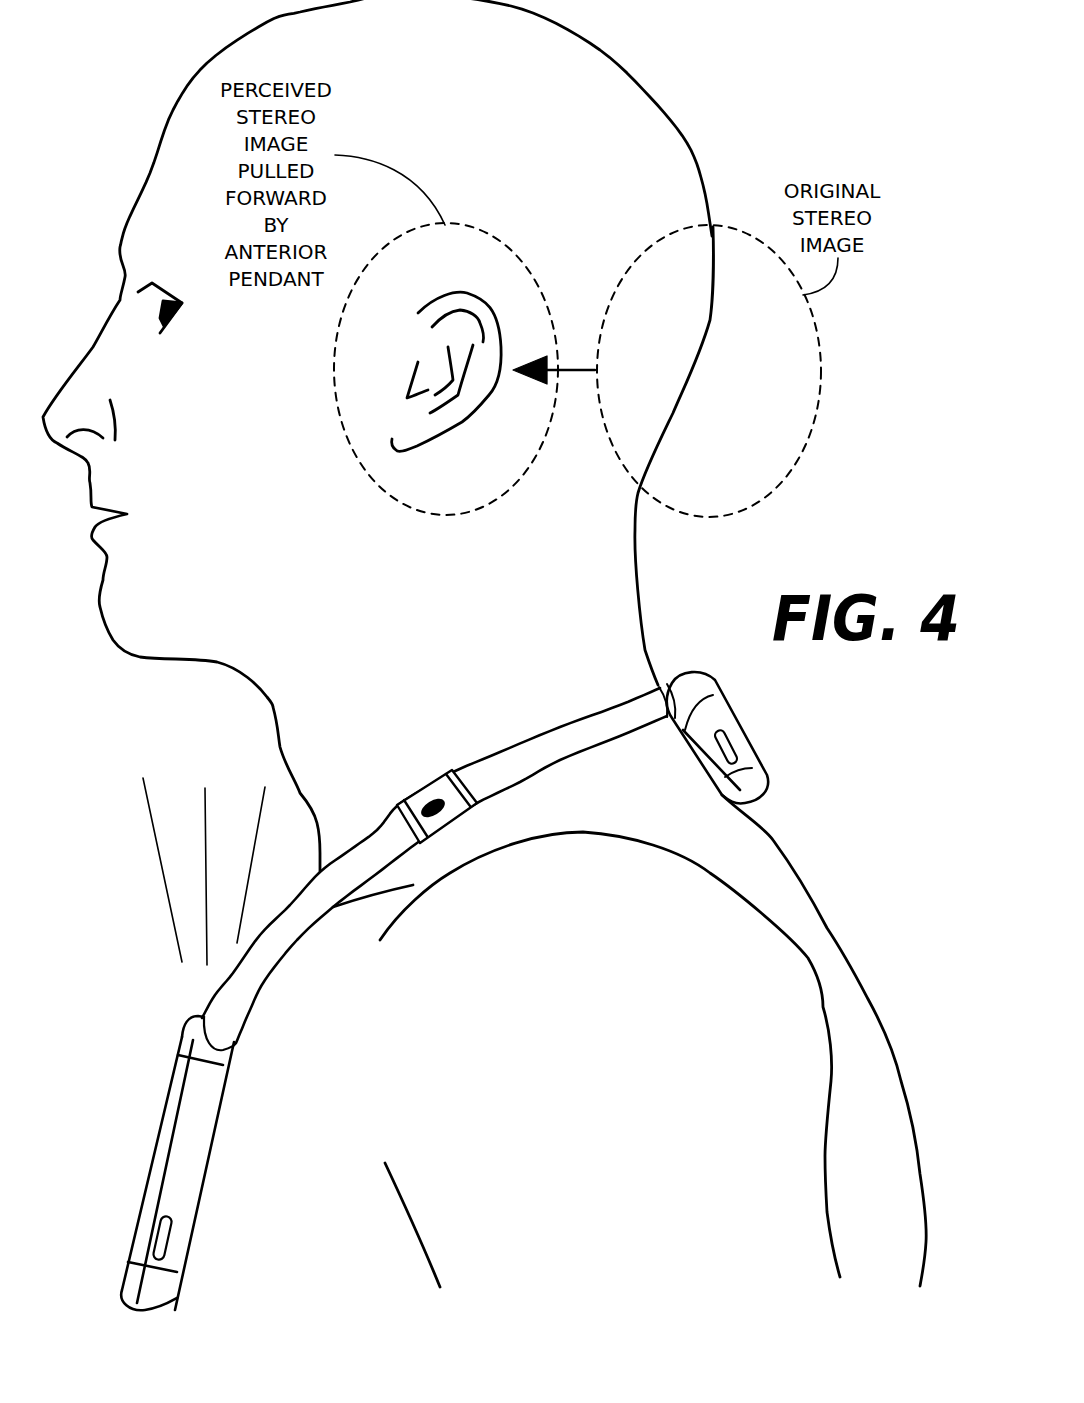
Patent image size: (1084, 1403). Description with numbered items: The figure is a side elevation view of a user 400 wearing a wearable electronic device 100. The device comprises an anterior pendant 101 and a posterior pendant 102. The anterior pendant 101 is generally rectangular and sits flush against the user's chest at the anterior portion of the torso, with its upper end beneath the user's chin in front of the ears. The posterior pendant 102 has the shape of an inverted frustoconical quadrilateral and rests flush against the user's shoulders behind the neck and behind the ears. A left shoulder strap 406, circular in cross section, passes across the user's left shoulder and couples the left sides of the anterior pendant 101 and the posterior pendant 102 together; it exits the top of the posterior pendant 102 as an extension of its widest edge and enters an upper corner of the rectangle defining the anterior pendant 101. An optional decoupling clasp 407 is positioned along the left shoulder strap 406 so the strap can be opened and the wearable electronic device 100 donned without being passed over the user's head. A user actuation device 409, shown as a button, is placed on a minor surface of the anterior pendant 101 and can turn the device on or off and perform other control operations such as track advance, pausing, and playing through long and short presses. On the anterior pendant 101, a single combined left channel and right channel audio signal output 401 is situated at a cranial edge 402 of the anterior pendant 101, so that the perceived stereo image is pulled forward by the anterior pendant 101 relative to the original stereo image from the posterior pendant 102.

The wearable electronic device 100 is at (786, 758).
The anterior pendant 101 is at (141, 1209).
The posterior pendant 102 is at (745, 732).
The user 400 is at (831, 932).
The combined left channel and right channel audio signal output 401 is at (192, 993).
The cranial edge 402 is at (180, 1032).
The left shoulder strap 406 is at (560, 743).
The decoupling clasp 407 is at (428, 788).
The user actuation device 409 is at (172, 1233).